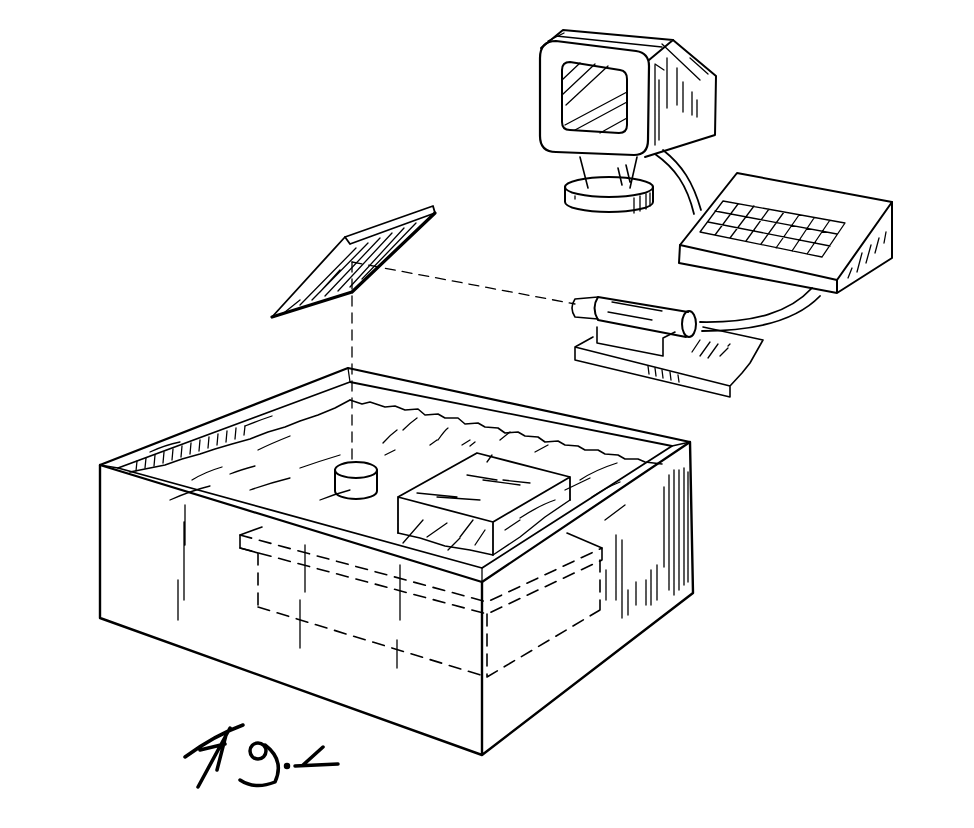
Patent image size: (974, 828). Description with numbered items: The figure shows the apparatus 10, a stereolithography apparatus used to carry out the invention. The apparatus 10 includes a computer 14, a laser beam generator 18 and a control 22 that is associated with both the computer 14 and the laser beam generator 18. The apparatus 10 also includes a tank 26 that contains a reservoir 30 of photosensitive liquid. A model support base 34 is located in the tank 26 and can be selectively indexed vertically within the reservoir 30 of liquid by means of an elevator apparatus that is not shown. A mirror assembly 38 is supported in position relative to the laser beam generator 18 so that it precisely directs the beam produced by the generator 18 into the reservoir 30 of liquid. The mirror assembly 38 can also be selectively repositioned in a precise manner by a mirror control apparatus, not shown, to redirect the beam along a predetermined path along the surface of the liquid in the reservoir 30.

The apparatus 10 is at (518, 392).
The computer 14 is at (692, 90).
The laser beam generator 18 is at (637, 303).
The control 22 is at (863, 200).
The tank 26 is at (687, 522).
The reservoir 30 is at (290, 430).
The model support base 34 is at (548, 627).
The mirror assembly 38 is at (392, 217).